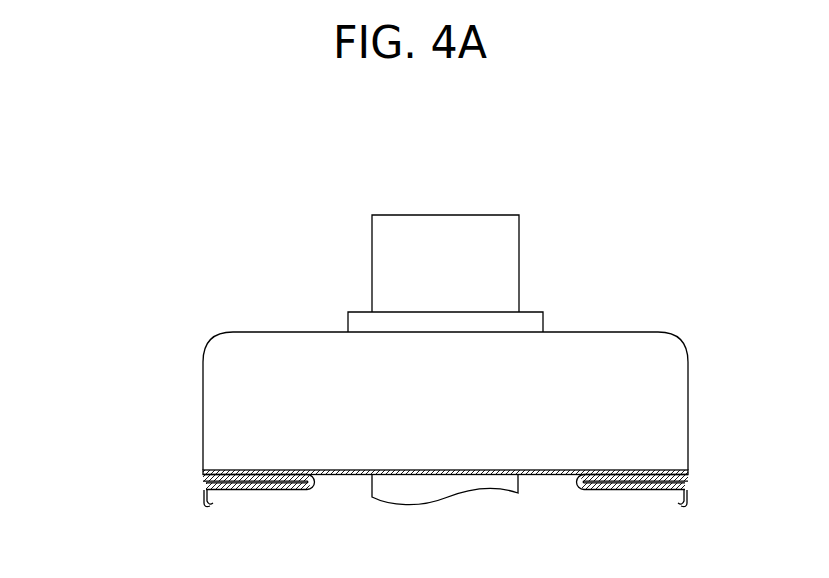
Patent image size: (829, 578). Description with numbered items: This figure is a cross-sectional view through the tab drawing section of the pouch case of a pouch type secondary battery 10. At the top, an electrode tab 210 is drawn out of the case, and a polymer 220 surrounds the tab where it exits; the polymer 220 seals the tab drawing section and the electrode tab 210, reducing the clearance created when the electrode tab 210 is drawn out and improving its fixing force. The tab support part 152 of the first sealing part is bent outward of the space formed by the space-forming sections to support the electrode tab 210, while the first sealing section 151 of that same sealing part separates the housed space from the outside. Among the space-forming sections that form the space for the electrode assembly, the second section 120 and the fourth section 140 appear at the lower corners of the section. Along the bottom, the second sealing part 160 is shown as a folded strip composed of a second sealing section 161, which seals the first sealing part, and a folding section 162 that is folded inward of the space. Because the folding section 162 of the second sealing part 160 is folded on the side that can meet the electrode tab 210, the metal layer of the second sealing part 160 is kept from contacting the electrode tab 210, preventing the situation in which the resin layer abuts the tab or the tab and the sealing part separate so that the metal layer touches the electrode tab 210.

The pouch type secondary battery 10 is at (71, 145).
The second section 120 is at (207, 505).
The fourth section 140 is at (692, 495).
The first sealing section 151 is at (637, 470).
The tab support part 152 is at (677, 398).
The second sealing part 160 is at (366, 472).
The second sealing section 161 is at (204, 492).
The folding section 162 is at (208, 494).
The electrode tab 210 is at (507, 237).
The polymer 220 is at (534, 325).